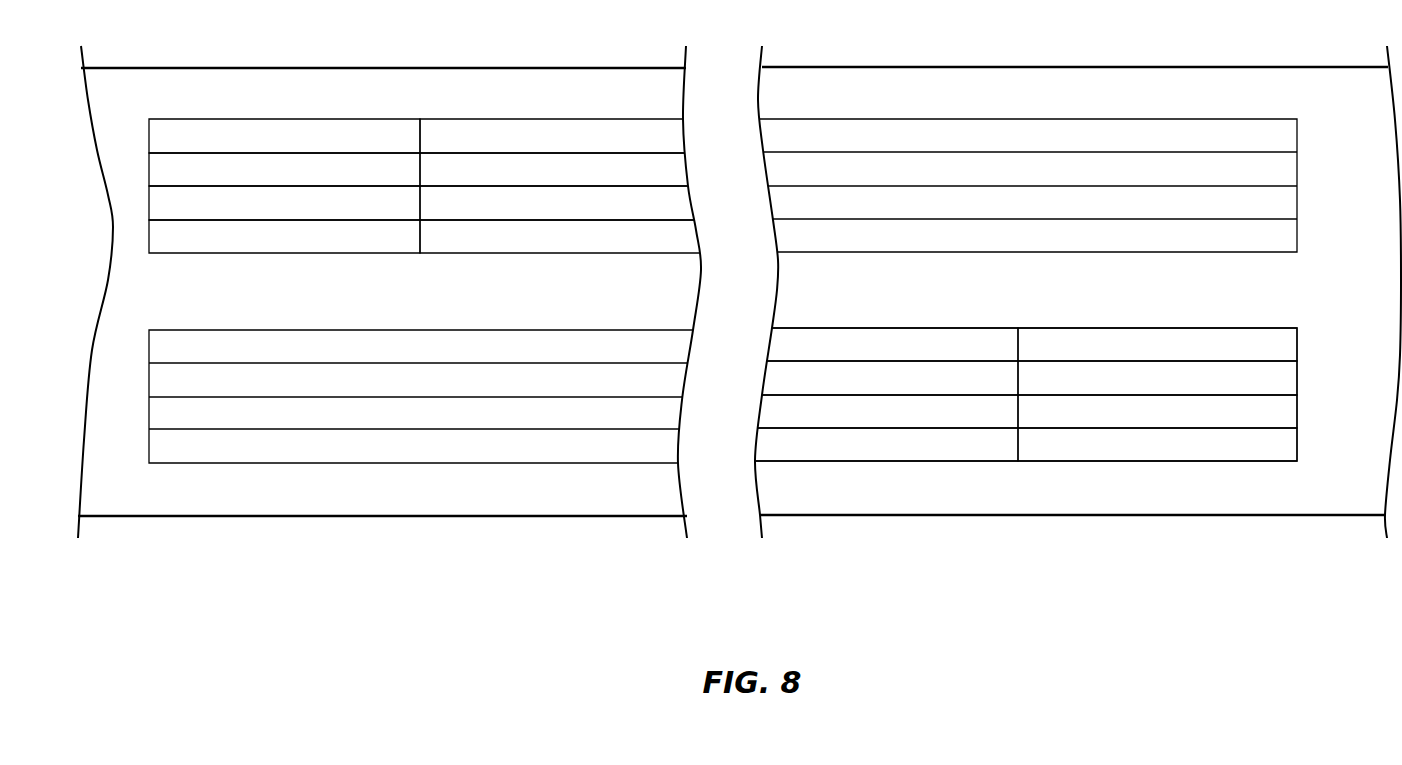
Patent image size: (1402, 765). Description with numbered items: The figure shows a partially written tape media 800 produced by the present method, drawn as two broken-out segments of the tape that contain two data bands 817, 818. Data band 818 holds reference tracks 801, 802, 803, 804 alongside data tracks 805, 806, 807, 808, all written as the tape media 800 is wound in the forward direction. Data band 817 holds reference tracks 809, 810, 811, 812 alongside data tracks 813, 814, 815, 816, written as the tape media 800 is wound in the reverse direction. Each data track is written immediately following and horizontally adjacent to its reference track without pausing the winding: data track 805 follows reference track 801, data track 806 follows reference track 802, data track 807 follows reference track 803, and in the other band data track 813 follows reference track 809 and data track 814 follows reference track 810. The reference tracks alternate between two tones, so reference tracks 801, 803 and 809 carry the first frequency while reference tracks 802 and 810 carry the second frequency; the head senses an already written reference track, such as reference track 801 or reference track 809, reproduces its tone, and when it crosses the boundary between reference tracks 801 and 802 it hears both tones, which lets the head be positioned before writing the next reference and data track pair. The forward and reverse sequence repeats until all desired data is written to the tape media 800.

The tape media 800 is at (525, 517).
The reference track 801 is at (248, 146).
The reference track 802 is at (248, 179).
The reference track 803 is at (248, 213).
The reference track 804 is at (248, 246).
The data track 805 is at (528, 146).
The data track 806 is at (528, 179).
The data track 807 is at (528, 213).
The data track 808 is at (528, 246).
The reference track 809 is at (1182, 354).
The reference track 810 is at (1182, 388).
The reference track 811 is at (1182, 421).
The reference track 812 is at (1182, 455).
The data track 813 is at (848, 354).
The data track 814 is at (848, 388).
The data track 815 is at (848, 421).
The data track 816 is at (848, 455).
The data band 817 is at (1297, 372).
The data band 818 is at (1297, 162).